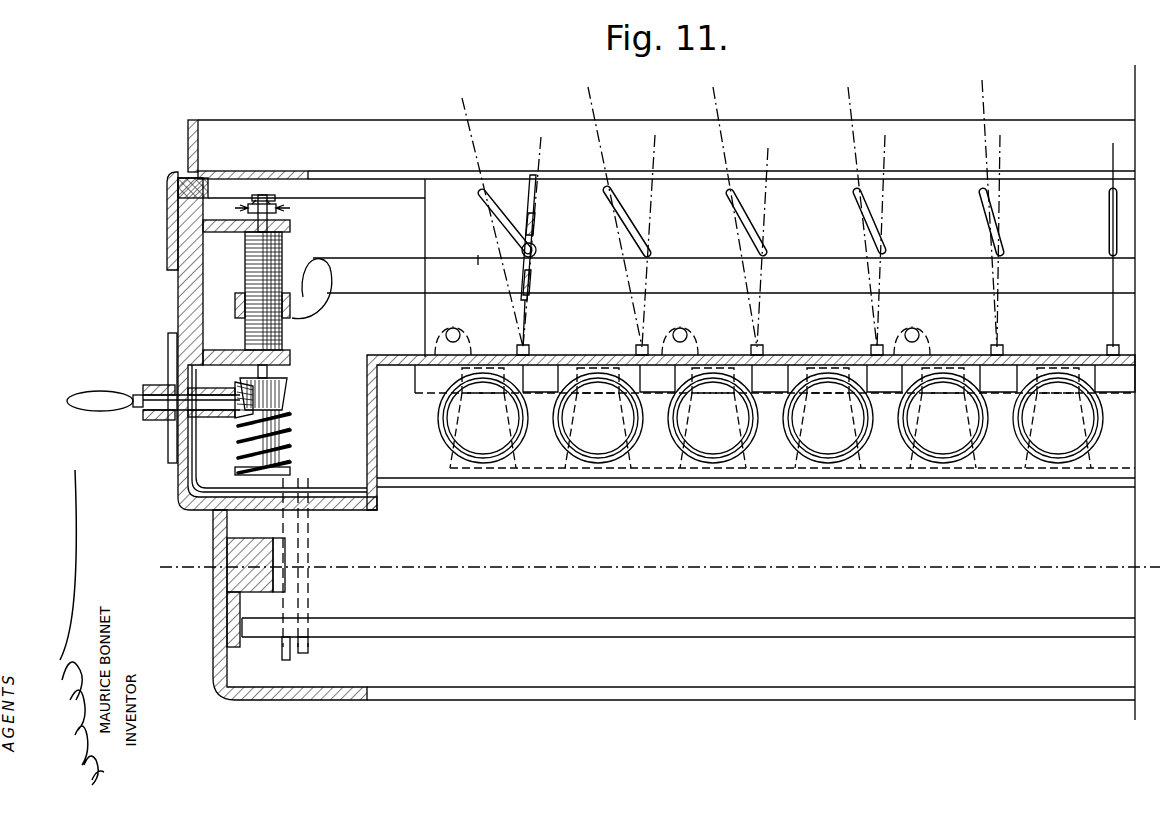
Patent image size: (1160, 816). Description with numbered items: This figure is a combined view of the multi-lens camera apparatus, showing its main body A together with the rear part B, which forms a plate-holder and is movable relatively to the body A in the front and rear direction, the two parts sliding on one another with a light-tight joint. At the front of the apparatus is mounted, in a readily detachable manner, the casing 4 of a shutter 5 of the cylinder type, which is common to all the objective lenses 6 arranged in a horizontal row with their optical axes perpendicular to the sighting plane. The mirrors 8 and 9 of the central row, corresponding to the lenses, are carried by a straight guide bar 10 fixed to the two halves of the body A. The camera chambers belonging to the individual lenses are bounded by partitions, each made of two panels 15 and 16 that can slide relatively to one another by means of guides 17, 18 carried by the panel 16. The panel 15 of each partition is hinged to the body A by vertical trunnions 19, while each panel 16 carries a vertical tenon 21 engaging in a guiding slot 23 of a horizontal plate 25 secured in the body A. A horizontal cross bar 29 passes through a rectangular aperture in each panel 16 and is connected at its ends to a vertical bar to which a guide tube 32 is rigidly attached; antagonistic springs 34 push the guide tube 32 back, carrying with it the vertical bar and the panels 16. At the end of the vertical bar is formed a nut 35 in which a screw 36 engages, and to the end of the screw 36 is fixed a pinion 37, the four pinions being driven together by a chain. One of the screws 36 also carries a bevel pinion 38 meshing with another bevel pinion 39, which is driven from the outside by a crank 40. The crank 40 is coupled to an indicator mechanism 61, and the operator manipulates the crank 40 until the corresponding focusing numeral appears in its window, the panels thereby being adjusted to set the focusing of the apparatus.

The rear part B is at (188, 140).
The main body A is at (178, 292).
The casing 4 is at (254, 668).
The shutter 5 is at (309, 650).
The objective lenses 6 is at (514, 440).
The mirrors 8 is at (458, 470).
The mirrors 9 is at (560, 470).
The straight guide bar 10 is at (420, 388).
The panel 15 is at (528, 325).
The panel 16 is at (533, 190).
The guide 17 is at (532, 277).
The guide 18 is at (536, 223).
The vertical trunnion 19 is at (517, 348).
The vertical tenon 21 is at (536, 249).
The guiding slot 23 is at (497, 214).
The horizontal plate 25 is at (425, 221).
The horizontal cross bar 29 is at (466, 251).
The guide tube 32 is at (292, 470).
The antagonistic springs 34 is at (290, 428).
The nut 35 is at (242, 294).
The screw 36 is at (283, 327).
The pinion 37 is at (278, 215).
The bevel pinion 38 is at (290, 386).
The bevel pinion 39 is at (232, 418).
The crank 40 is at (115, 421).
The indicator mechanism 61 is at (168, 343).